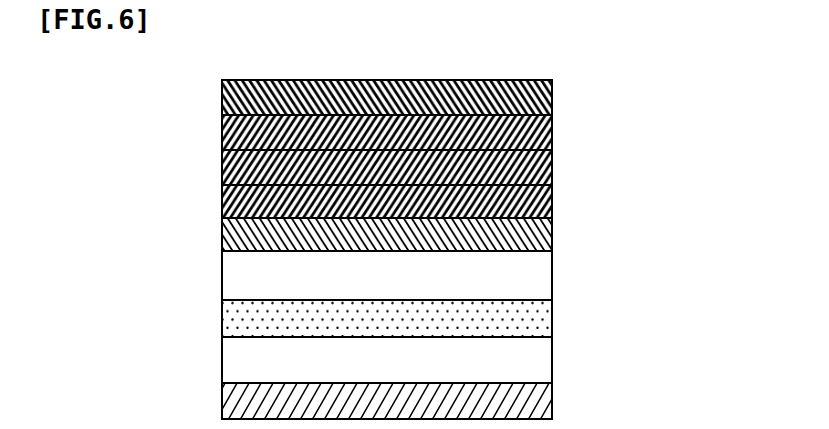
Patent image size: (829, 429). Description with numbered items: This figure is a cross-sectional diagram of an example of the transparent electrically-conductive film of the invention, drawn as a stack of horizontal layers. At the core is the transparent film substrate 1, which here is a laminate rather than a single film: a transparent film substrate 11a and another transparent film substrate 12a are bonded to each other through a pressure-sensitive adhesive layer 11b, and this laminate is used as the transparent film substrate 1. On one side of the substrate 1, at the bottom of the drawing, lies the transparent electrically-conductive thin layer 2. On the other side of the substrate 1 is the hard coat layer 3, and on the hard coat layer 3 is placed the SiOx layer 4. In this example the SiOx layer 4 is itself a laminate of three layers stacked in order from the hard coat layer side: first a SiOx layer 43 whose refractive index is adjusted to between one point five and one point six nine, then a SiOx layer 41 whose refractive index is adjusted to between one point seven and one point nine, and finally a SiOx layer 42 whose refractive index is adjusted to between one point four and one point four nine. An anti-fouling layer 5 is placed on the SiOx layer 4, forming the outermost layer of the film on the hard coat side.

The anti-fouling layer 5 is at (552, 100).
The SiOx layer 4 is at (477, 164).
The SiOx layer whose refractive index is adjusted to 1.4 to 1.49 42 is at (552, 133).
The SiOx layer whose refractive index is adjusted to 1.7 to 1.9 41 is at (552, 165).
The SiOx layer whose refractive index is adjusted to 1.5 to 1.69 43 is at (448, 200).
The hard coat layer 3 is at (552, 233).
The transparent film substrate 1 is at (491, 317).
The transparent film substrate 11a is at (552, 277).
The pressure-sensitive adhesive layer 11b is at (552, 320).
The transparent film substrate 12a is at (552, 365).
The transparent electrically-conductive thin layer 2 is at (552, 407).